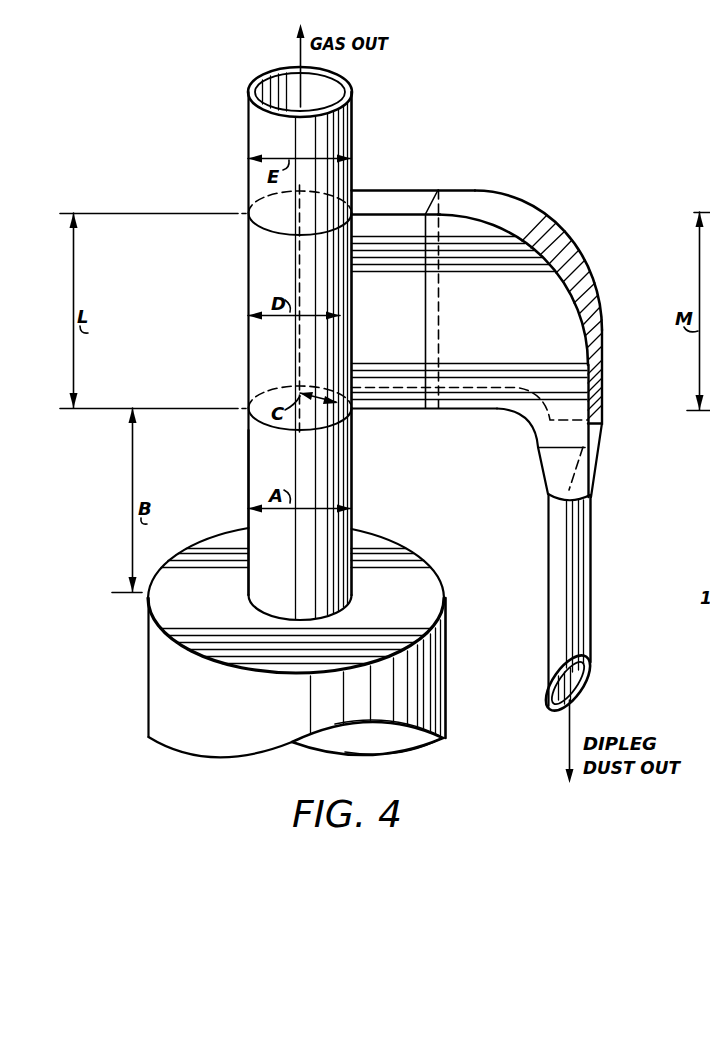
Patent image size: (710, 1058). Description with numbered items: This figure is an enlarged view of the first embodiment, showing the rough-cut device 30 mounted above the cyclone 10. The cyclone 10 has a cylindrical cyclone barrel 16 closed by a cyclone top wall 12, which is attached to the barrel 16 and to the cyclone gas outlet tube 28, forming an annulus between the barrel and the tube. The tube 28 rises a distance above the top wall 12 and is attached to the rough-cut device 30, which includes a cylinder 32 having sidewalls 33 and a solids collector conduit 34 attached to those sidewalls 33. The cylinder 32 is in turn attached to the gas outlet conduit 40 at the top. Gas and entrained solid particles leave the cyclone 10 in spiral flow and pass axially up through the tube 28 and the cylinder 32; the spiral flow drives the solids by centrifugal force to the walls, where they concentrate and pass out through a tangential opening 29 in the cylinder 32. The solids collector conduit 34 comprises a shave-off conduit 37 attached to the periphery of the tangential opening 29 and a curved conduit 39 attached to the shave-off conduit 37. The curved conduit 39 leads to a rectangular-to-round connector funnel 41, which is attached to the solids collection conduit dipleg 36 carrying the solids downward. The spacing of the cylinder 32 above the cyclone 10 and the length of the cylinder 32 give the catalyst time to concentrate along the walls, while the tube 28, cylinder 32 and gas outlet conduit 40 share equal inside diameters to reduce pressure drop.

The cyclone 10 is at (100, 585).
The cyclone top wall 12 is at (389, 548).
The cyclone barrel 16 is at (158, 647).
The cyclone gas outlet tube 28 is at (253, 481).
The tangential opening 29 is at (300, 351).
The rough-cut device 30 is at (190, 315).
The cylinder 32 is at (262, 266).
The sidewalls 33 is at (247, 342).
The solids collector conduit 34 is at (576, 277).
The solids collection conduit dipleg 36 is at (576, 543).
The shave-off conduit 37 is at (402, 199).
The curved conduit 39 is at (534, 231).
The gas outlet conduit 40 is at (330, 136).
The rectangular-to-round connector funnel 41 is at (597, 458).